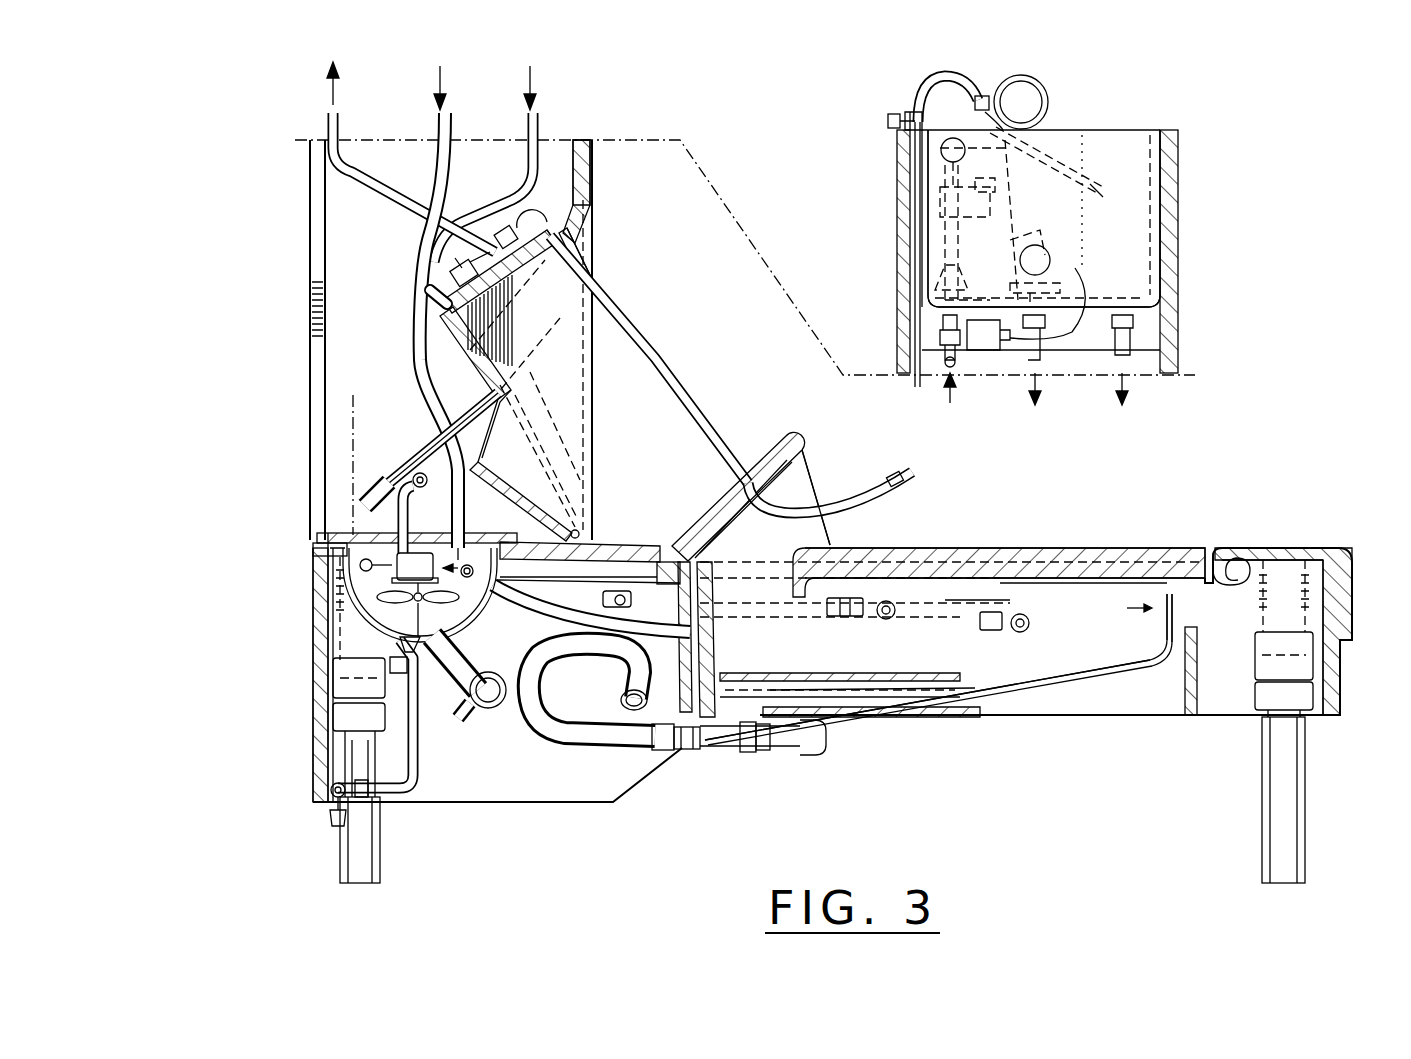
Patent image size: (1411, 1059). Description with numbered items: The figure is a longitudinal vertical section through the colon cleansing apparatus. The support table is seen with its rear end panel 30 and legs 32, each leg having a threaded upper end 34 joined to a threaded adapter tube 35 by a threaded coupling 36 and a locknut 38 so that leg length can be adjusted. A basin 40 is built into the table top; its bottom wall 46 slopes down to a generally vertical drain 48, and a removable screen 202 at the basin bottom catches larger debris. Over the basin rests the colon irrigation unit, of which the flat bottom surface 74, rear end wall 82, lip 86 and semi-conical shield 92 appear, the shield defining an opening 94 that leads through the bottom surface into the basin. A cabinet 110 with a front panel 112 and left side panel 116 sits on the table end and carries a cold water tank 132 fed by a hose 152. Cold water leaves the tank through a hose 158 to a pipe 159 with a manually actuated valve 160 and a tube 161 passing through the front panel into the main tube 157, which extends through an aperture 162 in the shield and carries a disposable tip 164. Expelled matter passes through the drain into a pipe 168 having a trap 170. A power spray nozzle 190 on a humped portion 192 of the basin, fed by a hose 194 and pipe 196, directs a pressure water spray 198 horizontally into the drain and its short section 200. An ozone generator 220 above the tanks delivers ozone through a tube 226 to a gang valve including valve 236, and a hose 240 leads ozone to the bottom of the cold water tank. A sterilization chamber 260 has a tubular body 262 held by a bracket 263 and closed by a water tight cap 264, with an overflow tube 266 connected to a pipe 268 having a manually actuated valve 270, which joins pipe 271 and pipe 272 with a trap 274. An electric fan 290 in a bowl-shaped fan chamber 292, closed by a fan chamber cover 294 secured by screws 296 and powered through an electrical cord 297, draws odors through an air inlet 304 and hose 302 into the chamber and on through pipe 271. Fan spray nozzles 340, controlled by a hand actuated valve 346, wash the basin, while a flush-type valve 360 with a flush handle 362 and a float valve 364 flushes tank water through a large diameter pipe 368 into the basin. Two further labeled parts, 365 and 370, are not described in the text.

The rear end panel 30 is at (313, 620).
The leg 32 is at (348, 867).
The threaded upper end 34 is at (357, 748).
The threaded adapter tube 35 is at (353, 640).
The threaded coupling 36 is at (333, 692).
The locknut 38 is at (333, 725).
The basin 40 is at (965, 602).
The bottom wall 46 is at (1103, 675).
The drain 48 is at (712, 740).
The bottom surface 74 is at (1096, 583).
The rear end wall 82 is at (668, 560).
The lip 86 is at (1082, 545).
The semi-conical shield 92 is at (795, 445).
The opening 94 is at (805, 468).
The cabinet 110 is at (597, 389).
The front panel 112 is at (593, 160).
The left side panel 116 is at (550, 175).
The cold water tank 132 is at (1120, 137).
The hose 152 is at (378, 190).
The main tube 157 is at (668, 383).
The hose 158 is at (537, 130).
The pipe 159 is at (510, 237).
The manually actuated valve 160 is at (463, 277).
The tube 161 is at (583, 267).
The aperture 162 is at (745, 463).
The disposable tip 164 is at (905, 475).
The pipe 168 is at (580, 755).
The trap 170 is at (660, 745).
The power spray nozzle 190 is at (750, 752).
The humped portion 192 is at (830, 705).
The hose 194 is at (762, 752).
The pipe 196 is at (827, 740).
The pressure water spray 198 is at (731, 720).
The short section 200 is at (678, 754).
The removable screen 202 is at (910, 685).
The ozone generator 220 is at (1050, 88).
The tube 226 is at (979, 95).
The valve 236 is at (887, 118).
The hose 240 is at (930, 78).
The sterilization chamber 260 is at (445, 378).
The tubular body 262 is at (425, 447).
The bracket 263 is at (573, 232).
The water tight cap 264 is at (365, 490).
The overflow tube 266 is at (533, 342).
The pipe 268 is at (397, 518).
The manually actuated valve 270 is at (420, 450).
The pipe 271 is at (480, 708).
The pipe 272 is at (508, 735).
The trap 274 is at (457, 742).
The electric fan 290 is at (313, 543).
The fan chamber 292 is at (415, 612).
The fan chamber cover 294 is at (478, 535).
The screws 296 is at (330, 532).
The electrical cord 297 is at (347, 577).
The hose 302 is at (1233, 576).
The air inlet 304 is at (1169, 625).
The fan spray nozzles 340 is at (888, 602).
The hand actuated valve 346 is at (333, 820).
The flush-type valve 360 is at (933, 203).
The flush handle 362 is at (930, 150).
The float valve 364 is at (927, 250).
The pump 365 is at (1060, 283).
The large diameter pipe 368 is at (425, 303).
The fitting 370 is at (1021, 632).